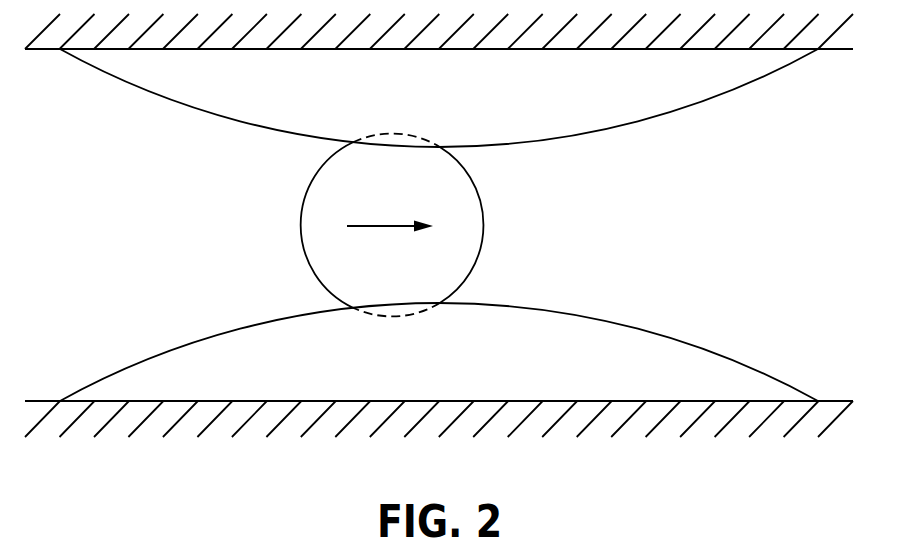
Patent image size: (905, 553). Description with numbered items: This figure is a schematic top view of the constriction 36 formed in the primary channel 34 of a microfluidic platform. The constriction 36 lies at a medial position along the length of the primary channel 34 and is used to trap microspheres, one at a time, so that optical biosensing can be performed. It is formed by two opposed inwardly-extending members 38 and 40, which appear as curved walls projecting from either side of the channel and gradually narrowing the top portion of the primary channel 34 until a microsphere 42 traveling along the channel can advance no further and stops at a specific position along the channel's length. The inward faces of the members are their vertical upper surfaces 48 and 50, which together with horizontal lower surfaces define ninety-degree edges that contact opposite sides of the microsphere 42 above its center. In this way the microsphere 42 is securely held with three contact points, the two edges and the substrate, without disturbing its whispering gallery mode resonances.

The primary channel 34 is at (142, 240).
The constriction 36 is at (764, 160).
The inwardly-extending member 38 is at (452, 107).
The inwardly-extending member 40 is at (452, 366).
The microsphere 42 is at (313, 247).
The vertical upper surface 48 is at (198, 112).
The vertical upper surface 50 is at (200, 338).